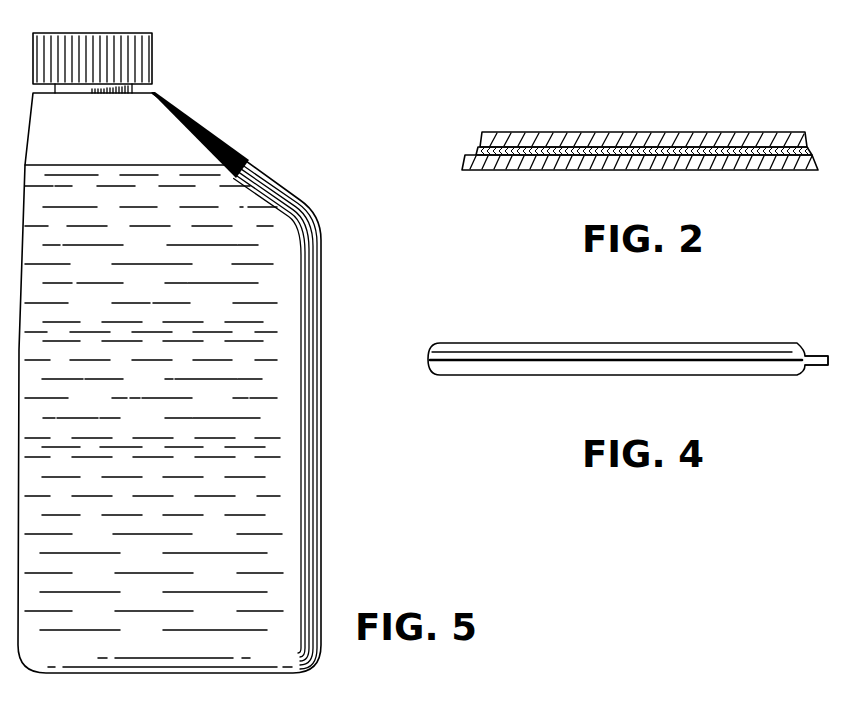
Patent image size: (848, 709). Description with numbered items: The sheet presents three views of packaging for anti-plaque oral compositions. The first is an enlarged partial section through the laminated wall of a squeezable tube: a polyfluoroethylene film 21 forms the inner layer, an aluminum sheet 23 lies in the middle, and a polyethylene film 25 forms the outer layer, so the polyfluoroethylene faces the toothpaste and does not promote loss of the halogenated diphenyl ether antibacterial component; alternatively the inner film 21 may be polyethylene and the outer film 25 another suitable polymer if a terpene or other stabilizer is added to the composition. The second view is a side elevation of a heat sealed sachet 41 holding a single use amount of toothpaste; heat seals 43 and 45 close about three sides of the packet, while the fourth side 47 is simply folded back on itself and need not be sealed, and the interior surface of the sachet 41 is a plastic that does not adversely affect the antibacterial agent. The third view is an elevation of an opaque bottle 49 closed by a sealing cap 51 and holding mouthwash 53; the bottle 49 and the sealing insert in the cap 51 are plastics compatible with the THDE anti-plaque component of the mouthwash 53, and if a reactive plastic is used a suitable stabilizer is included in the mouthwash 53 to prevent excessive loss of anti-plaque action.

In FIG. 2, the polyfluoroethylene film 21 is at (545, 132).
In FIG. 2, the aluminum sheet 23 is at (480, 150).
In FIG. 2, the polyethylene film 25 is at (472, 160).
In FIG. 4, the sachet 41 is at (612, 363).
In FIG. 4, the heat seal 43 is at (806, 368).
In FIG. 4, the heat seal 45 is at (537, 352).
In FIG. 4, the fourth side 47 is at (432, 367).
In FIG. 5, the opaque bottle 49 is at (318, 372).
In FIG. 5, the sealing cap 51 is at (150, 60).
In FIG. 5, the mouthwash 53 is at (163, 165).